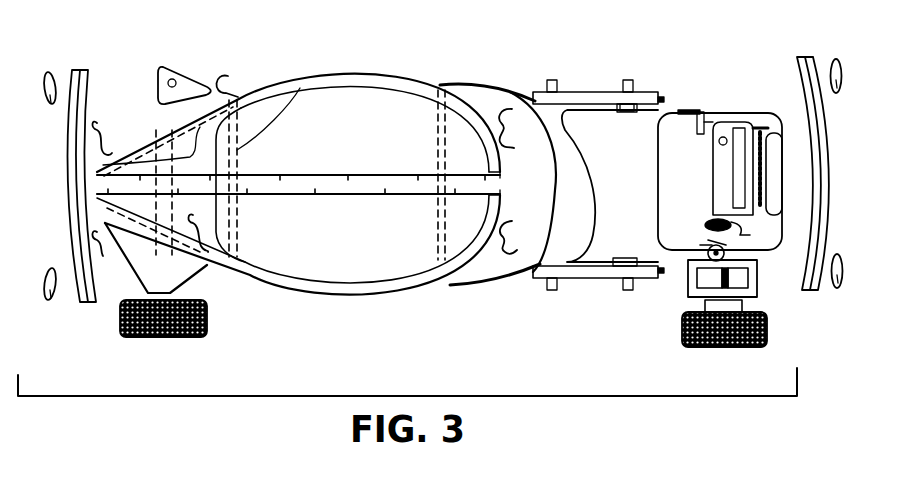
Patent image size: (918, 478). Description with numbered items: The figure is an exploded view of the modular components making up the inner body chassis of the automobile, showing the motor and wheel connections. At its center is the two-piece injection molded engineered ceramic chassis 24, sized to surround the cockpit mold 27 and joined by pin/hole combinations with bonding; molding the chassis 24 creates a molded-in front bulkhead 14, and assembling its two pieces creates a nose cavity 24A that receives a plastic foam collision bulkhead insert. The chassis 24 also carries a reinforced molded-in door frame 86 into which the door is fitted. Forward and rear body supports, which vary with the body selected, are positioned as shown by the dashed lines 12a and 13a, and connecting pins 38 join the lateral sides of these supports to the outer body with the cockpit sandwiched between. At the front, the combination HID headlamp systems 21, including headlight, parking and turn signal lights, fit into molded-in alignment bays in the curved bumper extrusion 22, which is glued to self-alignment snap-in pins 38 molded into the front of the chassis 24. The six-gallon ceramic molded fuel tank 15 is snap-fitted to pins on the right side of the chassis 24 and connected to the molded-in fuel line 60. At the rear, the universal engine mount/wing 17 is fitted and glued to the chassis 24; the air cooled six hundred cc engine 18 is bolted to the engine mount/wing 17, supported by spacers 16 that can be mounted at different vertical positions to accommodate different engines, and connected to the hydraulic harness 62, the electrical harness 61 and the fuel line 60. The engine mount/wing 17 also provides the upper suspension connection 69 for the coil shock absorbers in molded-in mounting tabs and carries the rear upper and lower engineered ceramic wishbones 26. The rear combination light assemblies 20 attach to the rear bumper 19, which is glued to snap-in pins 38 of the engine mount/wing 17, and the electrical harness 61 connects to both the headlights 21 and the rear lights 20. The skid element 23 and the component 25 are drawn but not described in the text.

The dashed lines showing forward body support position 12a is at (300, 88).
The dashed lines showing rear body support position 13a is at (440, 140).
The front bulkhead 14 is at (163, 147).
The fuel tank 15 is at (182, 81).
The spacers 16 is at (630, 113).
The universal engine mount/wing 17 is at (573, 102).
The engine 18 is at (725, 137).
The rear bumper 19 is at (810, 57).
The rear combination light assemblies 20 is at (843, 77).
The front combination HID headlamp systems 21 is at (53, 296).
The curved bumper extrusion 22 is at (78, 300).
The skid plate 23 is at (130, 267).
The chassis 24 is at (267, 282).
The nose cavity 24A is at (131, 155).
The battery 25 is at (710, 348).
The rear upper and lower wishbones 26 is at (757, 283).
The cockpit mold 27 is at (248, 125).
The connecting pins 38 is at (100, 200).
The fuel line 60 is at (232, 97).
The electrical harness 61 is at (97, 128).
The hydraulic harness 62 is at (97, 232).
The upper suspension connection 69 is at (552, 81).
The molded-in door frame 86 is at (360, 80).